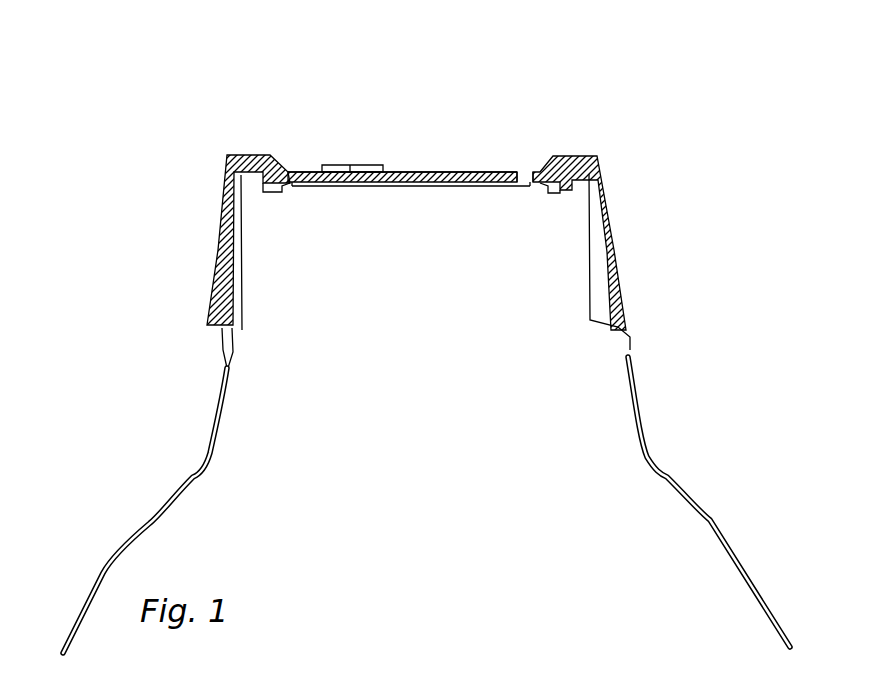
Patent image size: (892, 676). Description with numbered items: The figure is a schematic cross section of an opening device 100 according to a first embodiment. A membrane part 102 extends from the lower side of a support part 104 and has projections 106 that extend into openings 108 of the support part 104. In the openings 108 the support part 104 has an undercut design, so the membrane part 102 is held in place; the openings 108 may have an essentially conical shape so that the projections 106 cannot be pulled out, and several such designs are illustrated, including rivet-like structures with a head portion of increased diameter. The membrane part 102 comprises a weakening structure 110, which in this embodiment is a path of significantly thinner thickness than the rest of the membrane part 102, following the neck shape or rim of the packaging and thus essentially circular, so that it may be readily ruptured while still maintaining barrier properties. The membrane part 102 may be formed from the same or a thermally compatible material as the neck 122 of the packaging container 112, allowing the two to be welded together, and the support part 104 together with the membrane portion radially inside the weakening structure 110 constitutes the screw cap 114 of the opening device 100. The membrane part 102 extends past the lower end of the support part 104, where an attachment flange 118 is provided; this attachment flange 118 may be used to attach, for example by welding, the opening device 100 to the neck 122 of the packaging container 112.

The opening device 100 is at (158, 75).
The membrane part 102 is at (460, 188).
The support part 104 is at (608, 170).
The projections 106 is at (350, 172).
The openings 108 is at (318, 190).
The weakening structure 110 is at (296, 190).
The packaging container 112 is at (665, 468).
The screw cap 114 is at (620, 256).
The attachment flange 118 is at (230, 375).
The neck 122 is at (600, 290).